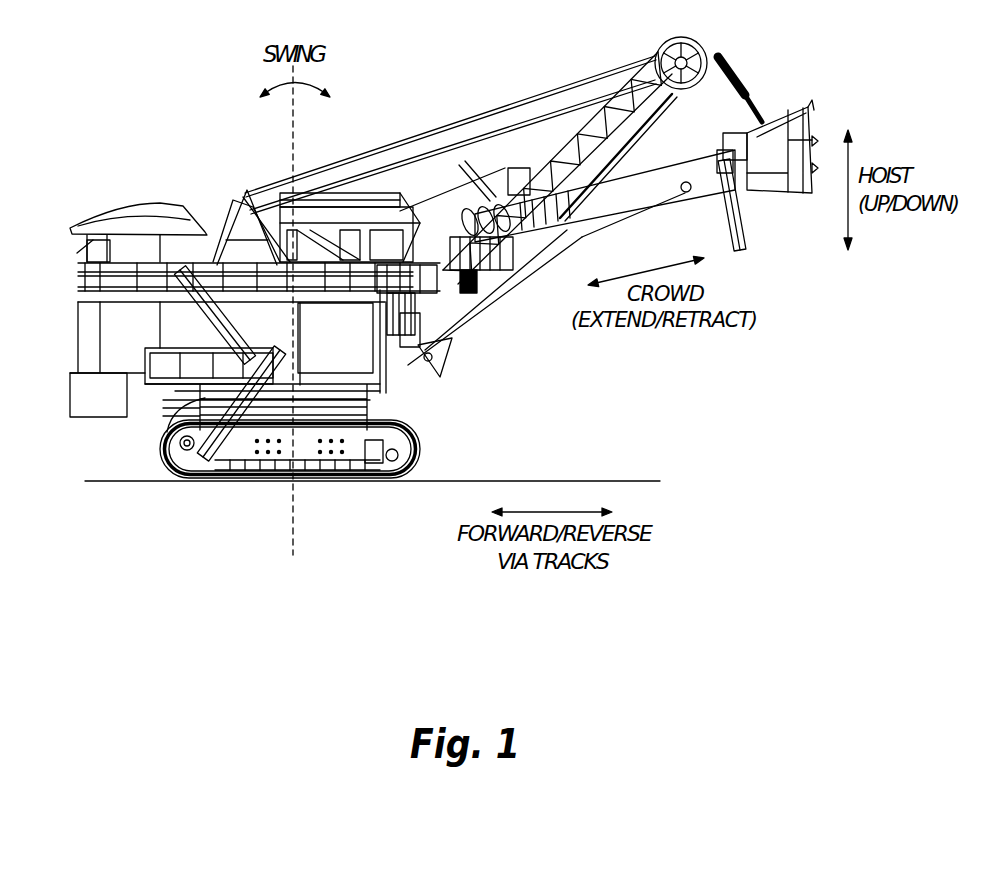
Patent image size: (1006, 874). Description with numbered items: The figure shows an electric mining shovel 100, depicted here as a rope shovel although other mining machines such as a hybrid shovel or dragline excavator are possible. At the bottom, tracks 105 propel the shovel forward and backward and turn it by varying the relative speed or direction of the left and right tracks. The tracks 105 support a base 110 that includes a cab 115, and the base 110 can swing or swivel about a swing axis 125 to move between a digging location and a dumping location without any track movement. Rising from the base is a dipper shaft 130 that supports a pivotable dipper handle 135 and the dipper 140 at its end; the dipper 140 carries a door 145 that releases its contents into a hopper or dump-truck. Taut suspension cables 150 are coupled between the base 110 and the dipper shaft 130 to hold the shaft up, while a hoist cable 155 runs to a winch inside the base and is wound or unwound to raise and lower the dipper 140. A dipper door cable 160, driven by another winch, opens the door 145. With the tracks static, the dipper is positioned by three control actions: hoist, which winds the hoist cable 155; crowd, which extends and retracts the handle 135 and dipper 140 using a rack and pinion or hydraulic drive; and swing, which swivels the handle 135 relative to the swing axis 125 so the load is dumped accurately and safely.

The electric mining shovel 100 is at (115, 115).
The tracks 105 is at (420, 452).
The base 110 is at (118, 357).
The cab 115 is at (381, 197).
The swing axis 125 is at (290, 512).
The dipper shaft 130 is at (653, 102).
The dipper handle 135 is at (633, 177).
The dipper 140 is at (770, 128).
The door 145 is at (742, 227).
The suspension cables 150 is at (378, 145).
The hoist cable 155 is at (642, 57).
The dipper door cable 160 is at (573, 237).